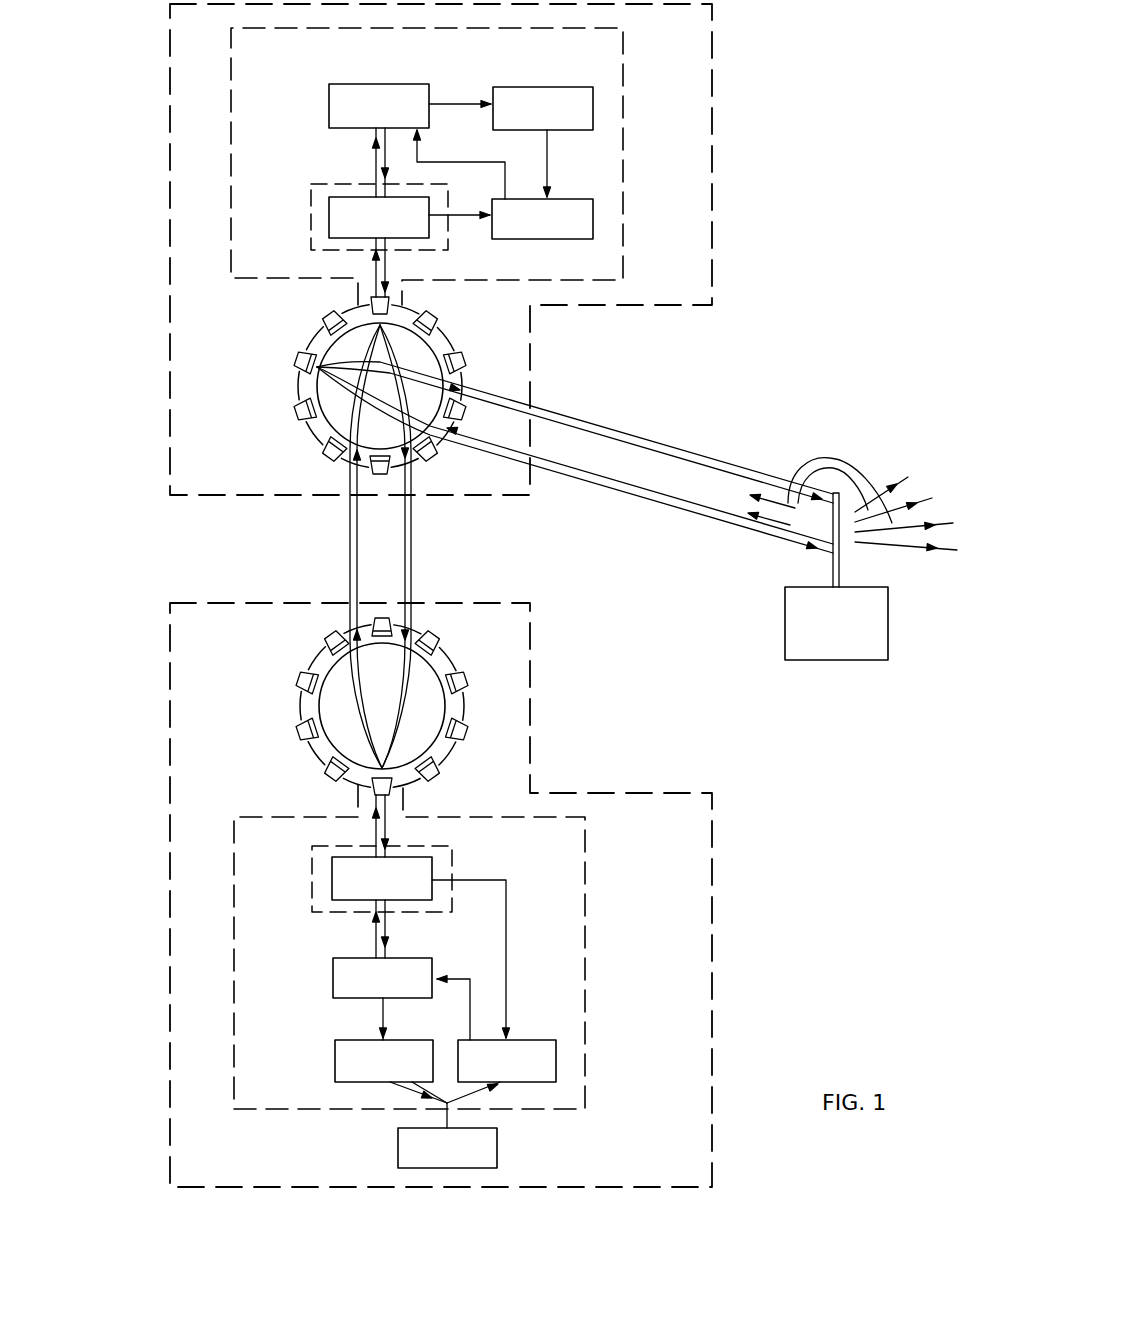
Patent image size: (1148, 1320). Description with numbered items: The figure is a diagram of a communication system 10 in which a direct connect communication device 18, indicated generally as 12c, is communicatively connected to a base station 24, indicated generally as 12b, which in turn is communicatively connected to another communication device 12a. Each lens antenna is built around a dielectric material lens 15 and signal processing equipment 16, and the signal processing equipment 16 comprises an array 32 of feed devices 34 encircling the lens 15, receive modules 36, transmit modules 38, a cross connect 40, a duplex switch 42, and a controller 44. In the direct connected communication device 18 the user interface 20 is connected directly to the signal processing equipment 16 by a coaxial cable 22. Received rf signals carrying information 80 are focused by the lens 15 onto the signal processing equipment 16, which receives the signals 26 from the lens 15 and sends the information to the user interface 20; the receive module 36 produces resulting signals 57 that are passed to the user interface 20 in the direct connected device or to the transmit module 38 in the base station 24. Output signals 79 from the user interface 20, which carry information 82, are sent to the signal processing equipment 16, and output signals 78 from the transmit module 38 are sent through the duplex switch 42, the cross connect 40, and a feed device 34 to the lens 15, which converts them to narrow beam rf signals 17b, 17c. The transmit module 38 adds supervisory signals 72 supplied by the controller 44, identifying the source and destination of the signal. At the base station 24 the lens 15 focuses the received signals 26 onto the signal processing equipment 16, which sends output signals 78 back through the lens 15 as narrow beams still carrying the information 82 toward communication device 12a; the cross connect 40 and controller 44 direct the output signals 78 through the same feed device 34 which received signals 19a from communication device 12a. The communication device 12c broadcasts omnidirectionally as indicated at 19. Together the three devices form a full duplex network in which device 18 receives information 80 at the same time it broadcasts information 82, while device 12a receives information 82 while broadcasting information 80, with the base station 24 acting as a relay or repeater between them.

The communication system 10 is at (152, 558).
The communication device 12a is at (871, 568).
The base station 12b is at (770, 160).
The direct connect communication device 12c is at (770, 903).
The lens 15 is at (338, 418).
The signal processing equipment 16 is at (624, 122).
The narrow beam rf signal 17b is at (352, 548).
The narrow beam rf signal 17c is at (360, 548).
The direct connected communication device 18 is at (713, 1005).
The omnidirectional broadcast 19 is at (842, 467).
The received signals 19a is at (590, 433).
The user interface 20 is at (435, 1164).
The coaxial cable 22 is at (452, 1115).
The base station 24 is at (713, 50).
The received signals 26 is at (455, 103).
The array 32 is at (300, 402).
The feed device 34 is at (300, 358).
The receive module 36 is at (531, 122).
The transmit module 38 is at (531, 235).
The cross connect 40 is at (369, 233).
The duplex switch 42 is at (366, 120).
The controller 44 is at (322, 185).
The resulting signals 57 is at (549, 166).
The supervisory signals 72 is at (466, 216).
The output signals 78 is at (445, 162).
The output signals 79 is at (500, 1098).
The information 80 is at (352, 510).
The information 82 is at (358, 560).